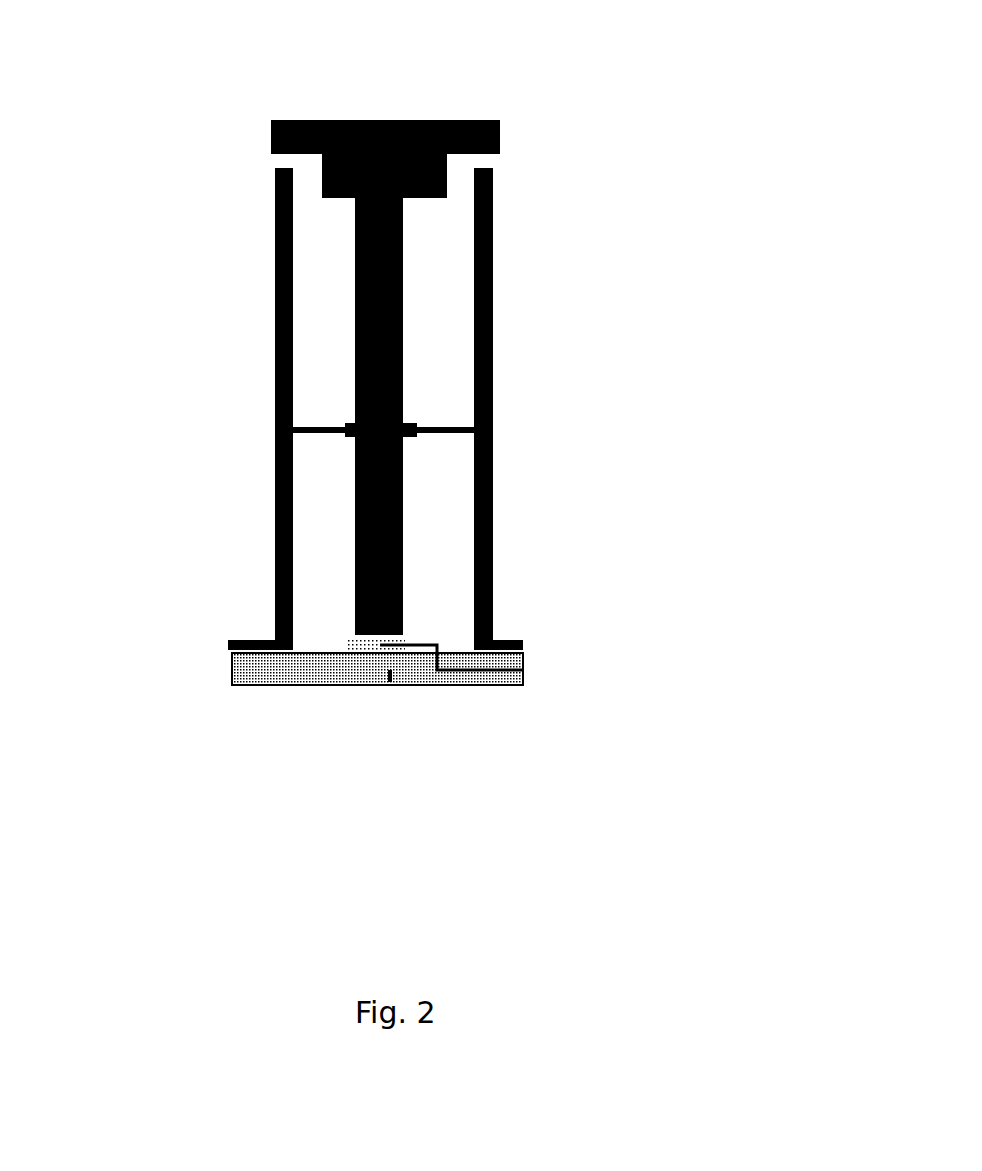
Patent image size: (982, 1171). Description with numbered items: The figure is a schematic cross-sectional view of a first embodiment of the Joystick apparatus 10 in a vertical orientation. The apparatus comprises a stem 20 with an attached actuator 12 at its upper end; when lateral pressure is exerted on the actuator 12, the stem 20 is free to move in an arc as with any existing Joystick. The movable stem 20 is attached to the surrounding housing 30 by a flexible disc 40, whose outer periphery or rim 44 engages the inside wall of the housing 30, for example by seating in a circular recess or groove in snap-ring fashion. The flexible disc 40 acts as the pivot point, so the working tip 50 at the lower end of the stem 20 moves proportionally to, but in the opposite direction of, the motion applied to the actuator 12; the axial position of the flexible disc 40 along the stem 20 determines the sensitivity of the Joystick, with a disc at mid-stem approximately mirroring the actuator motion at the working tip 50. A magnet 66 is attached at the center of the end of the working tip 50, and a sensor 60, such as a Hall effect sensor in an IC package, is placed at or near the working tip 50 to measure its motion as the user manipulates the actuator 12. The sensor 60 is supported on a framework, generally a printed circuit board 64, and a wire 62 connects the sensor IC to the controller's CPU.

The ink jet printing apparatus 10 is at (155, 80).
The actuator 12 is at (500, 136).
The stem 20 is at (357, 265).
The housing 30 is at (493, 198).
The flexible disc 40 is at (433, 425).
The rim 44 is at (470, 430).
The working tip 50 is at (407, 615).
The sensor 60 is at (367, 645).
The wire 62 is at (523, 672).
The printed circuit board 64 is at (413, 670).
The magnet 66 is at (350, 632).